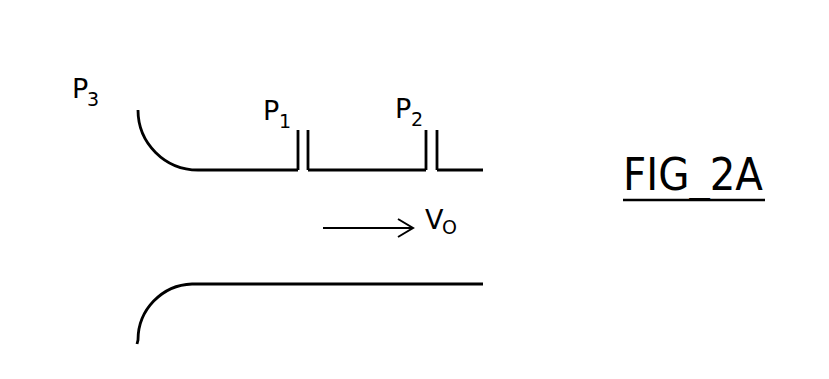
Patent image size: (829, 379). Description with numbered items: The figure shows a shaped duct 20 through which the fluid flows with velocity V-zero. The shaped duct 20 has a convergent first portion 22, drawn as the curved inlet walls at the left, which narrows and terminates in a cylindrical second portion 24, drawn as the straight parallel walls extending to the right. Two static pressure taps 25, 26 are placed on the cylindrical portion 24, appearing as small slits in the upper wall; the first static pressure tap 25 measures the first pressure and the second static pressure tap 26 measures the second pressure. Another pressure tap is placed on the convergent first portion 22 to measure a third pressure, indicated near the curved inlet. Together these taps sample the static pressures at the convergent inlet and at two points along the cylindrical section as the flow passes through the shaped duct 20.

The shaped duct 20 is at (352, 116).
The convergent first portion 22 is at (138, 155).
The cylindrical second portion 24 is at (290, 283).
The static pressure tap 25 is at (301, 150).
The static pressure tap 26 is at (433, 148).